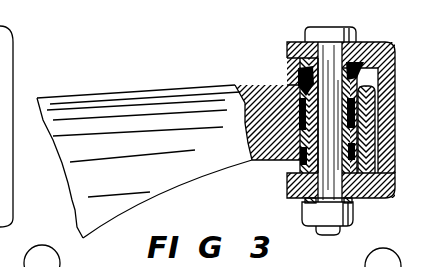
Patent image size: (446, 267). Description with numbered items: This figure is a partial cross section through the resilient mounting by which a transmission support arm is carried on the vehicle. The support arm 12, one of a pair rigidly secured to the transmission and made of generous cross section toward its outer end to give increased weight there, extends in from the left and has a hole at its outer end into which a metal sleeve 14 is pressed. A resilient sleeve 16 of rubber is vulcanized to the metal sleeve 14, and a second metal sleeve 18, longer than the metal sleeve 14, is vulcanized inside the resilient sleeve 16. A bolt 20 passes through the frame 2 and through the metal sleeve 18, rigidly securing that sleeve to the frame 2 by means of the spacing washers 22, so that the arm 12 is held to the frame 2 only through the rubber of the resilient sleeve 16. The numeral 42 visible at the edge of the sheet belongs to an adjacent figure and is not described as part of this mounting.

The frame 2 is at (380, 47).
The support arm 12 is at (191, 98).
The metal sleeve 14 is at (298, 80).
The resilient sleeve 16 is at (301, 76).
The metal sleeve 18 is at (295, 171).
The bolt 20 is at (343, 29).
The spacing washer 22 is at (286, 182).
The adjacent figure numeral 42 is at (318, 265).